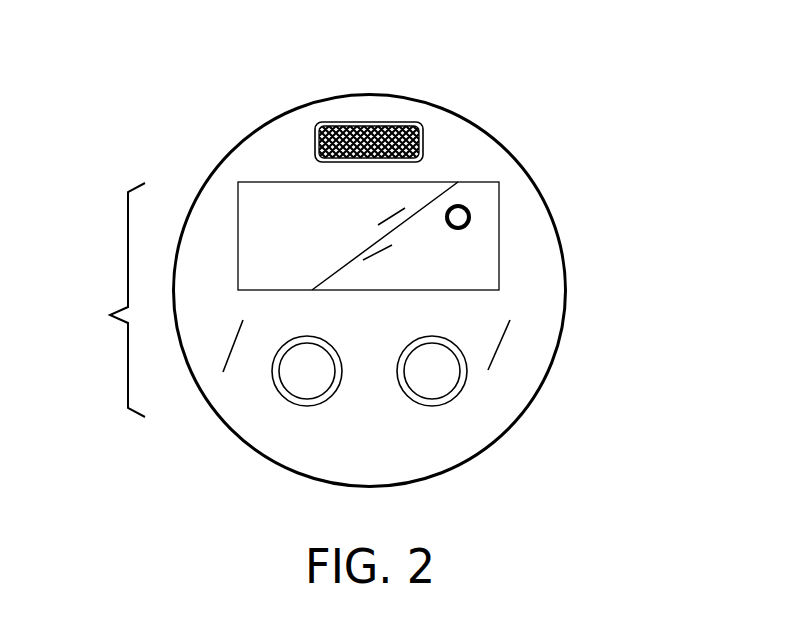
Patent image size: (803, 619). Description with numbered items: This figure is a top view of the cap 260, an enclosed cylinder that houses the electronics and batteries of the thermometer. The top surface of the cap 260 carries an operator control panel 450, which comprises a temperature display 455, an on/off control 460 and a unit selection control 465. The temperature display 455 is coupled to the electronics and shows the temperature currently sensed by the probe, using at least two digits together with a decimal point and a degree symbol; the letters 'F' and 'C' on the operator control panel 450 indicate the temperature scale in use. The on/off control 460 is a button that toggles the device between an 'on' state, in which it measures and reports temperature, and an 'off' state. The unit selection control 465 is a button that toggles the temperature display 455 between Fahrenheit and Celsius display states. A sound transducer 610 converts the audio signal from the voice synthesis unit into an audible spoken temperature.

The cap 260 is at (403, 96).
The operator control panel 450 is at (94, 300).
The temperature display 455 is at (499, 242).
The on/off control 460 is at (300, 380).
The unit selection control 465 is at (427, 385).
The sound transducer 610 is at (423, 140).